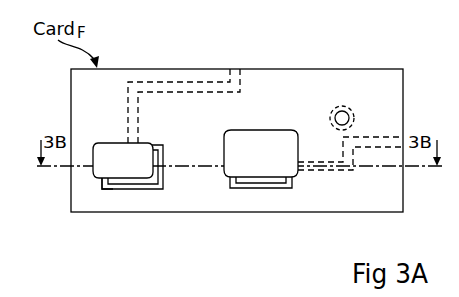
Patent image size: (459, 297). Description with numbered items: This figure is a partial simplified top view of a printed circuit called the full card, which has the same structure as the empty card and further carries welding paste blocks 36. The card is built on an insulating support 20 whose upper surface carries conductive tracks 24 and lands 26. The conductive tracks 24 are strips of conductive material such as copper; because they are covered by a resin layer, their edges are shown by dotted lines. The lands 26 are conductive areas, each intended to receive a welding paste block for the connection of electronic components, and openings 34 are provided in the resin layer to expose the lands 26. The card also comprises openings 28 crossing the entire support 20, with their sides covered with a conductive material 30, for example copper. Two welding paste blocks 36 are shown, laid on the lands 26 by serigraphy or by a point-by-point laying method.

The insulating support 20 is at (82, 203).
The conductive tracks 24 is at (176, 84).
The lands 26 is at (155, 183).
The openings 28 is at (345, 109).
The conductive material 30 is at (352, 110).
The openings 34 is at (113, 190).
The welding paste blocks 36 is at (107, 158).